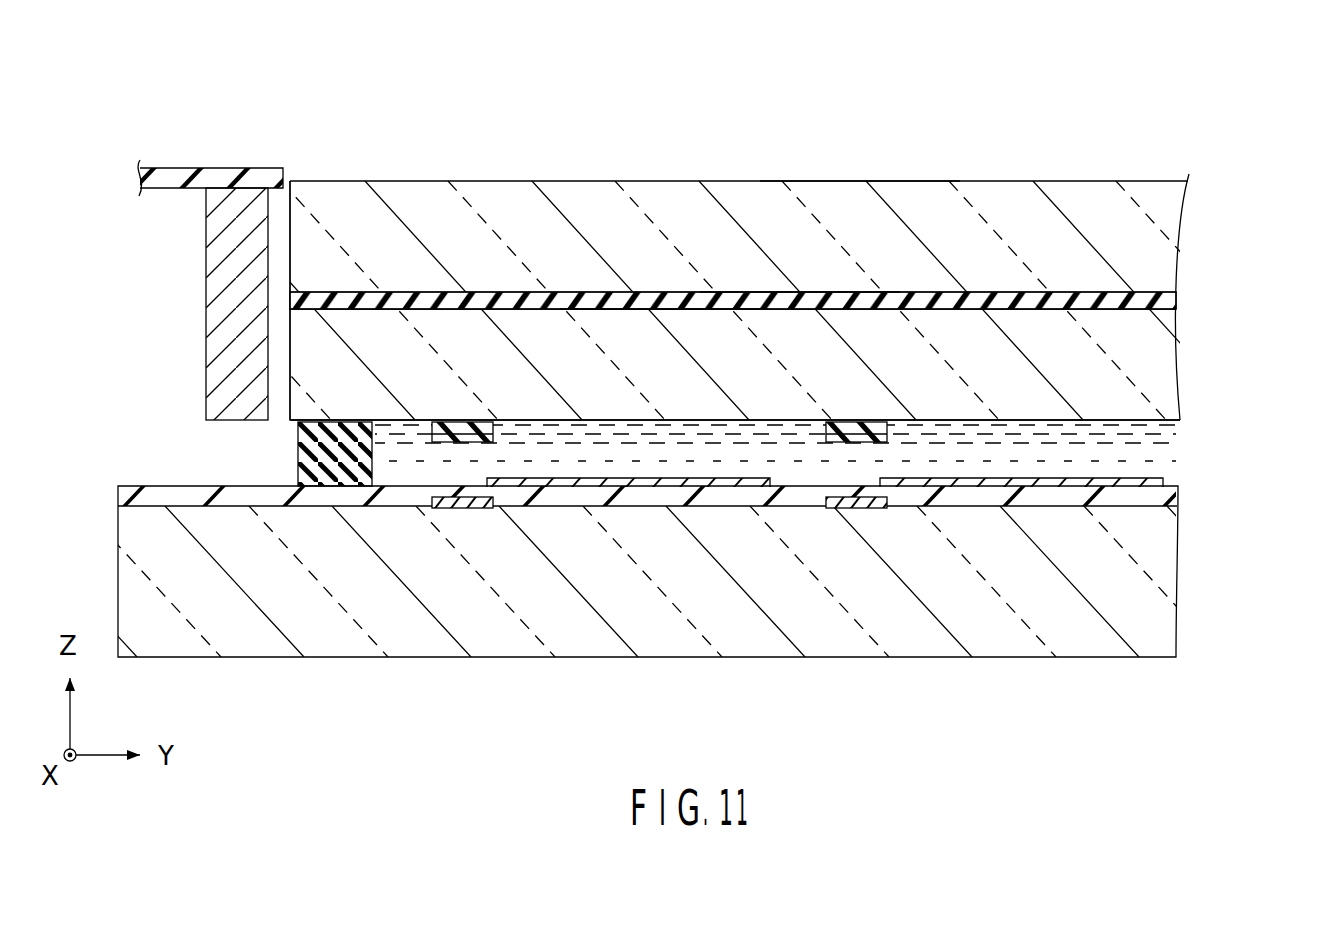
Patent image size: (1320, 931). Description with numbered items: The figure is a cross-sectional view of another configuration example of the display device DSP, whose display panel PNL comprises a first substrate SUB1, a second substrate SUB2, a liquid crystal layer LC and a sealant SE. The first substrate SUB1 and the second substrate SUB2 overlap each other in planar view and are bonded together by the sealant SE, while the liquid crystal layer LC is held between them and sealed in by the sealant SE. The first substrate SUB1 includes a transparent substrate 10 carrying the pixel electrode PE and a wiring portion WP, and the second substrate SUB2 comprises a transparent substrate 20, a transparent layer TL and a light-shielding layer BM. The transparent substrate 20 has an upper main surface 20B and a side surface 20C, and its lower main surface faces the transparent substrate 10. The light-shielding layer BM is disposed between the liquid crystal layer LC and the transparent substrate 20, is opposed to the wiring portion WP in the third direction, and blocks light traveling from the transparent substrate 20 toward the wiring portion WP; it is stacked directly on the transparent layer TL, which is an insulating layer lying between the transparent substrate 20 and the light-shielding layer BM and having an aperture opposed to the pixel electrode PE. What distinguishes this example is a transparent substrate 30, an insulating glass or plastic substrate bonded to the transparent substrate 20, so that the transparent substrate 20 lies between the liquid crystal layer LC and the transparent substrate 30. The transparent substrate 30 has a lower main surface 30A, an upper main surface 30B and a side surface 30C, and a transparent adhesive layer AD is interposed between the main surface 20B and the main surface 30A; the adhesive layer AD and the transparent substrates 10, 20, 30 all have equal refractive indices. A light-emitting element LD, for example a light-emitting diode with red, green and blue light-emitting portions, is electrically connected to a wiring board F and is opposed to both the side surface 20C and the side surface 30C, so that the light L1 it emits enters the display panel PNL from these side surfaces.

The display device DSP is at (1183, 122).
The display panel PNL is at (948, 672).
The first substrate SUB1 is at (1196, 600).
The second substrate SUB2 is at (1192, 352).
The transparent substrate 10 is at (346, 642).
The transparent substrate 20 is at (953, 335).
The main surface (upper surface) 20B is at (652, 303).
The side surface 20C is at (275, 374).
The transparent substrate 30 is at (1028, 190).
The main surface (lower surface) 30A is at (784, 314).
The main surface (upper surface) 30B is at (849, 172).
The side surface 30C is at (275, 223).
The adhesive layer AD is at (1178, 301).
The liquid crystal layer LC is at (656, 466).
The sealant SE is at (298, 456).
The pixel electrode PE is at (600, 490).
The wiring portion WP is at (462, 510).
The light-shielding layer BM is at (447, 444).
The transparent layer TL is at (446, 434).
The light-emitting element LD is at (318, 251).
The light L1 is at (312, 267).
The wiring board F is at (177, 170).